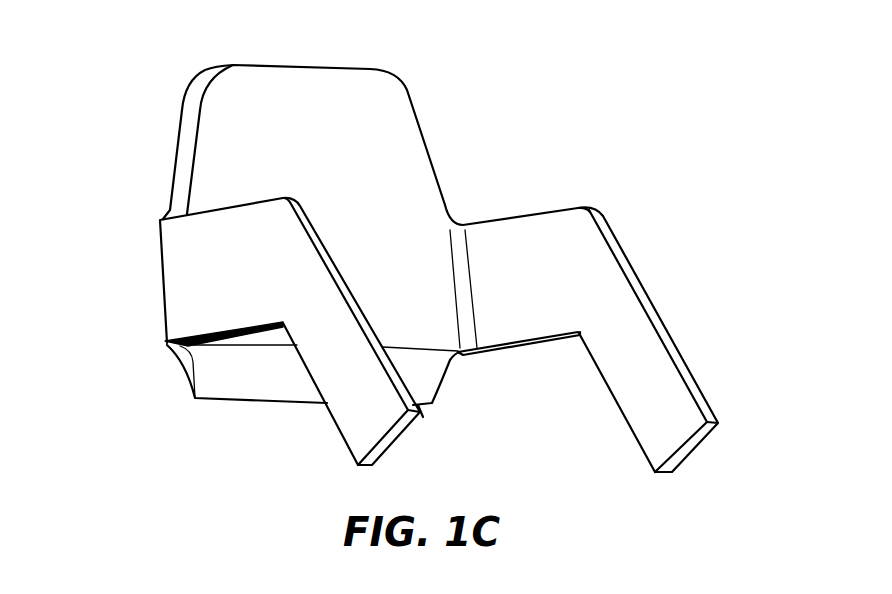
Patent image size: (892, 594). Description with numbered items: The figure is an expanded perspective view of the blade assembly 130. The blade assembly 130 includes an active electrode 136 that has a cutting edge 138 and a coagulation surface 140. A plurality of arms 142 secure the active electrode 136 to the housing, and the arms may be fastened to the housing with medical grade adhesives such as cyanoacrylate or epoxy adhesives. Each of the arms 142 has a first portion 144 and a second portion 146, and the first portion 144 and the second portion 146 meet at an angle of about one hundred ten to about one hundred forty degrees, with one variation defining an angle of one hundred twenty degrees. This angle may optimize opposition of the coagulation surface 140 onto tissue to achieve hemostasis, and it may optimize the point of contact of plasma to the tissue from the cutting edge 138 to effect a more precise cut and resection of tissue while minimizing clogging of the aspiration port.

The blade assembly 130 is at (528, 97).
The active electrode 136 is at (392, 128).
The cutting edge 138 is at (250, 403).
The coagulation surface 140 is at (175, 130).
The arms 142 is at (388, 443).
The first portion 144 is at (190, 273).
The second portion 146 is at (358, 428).